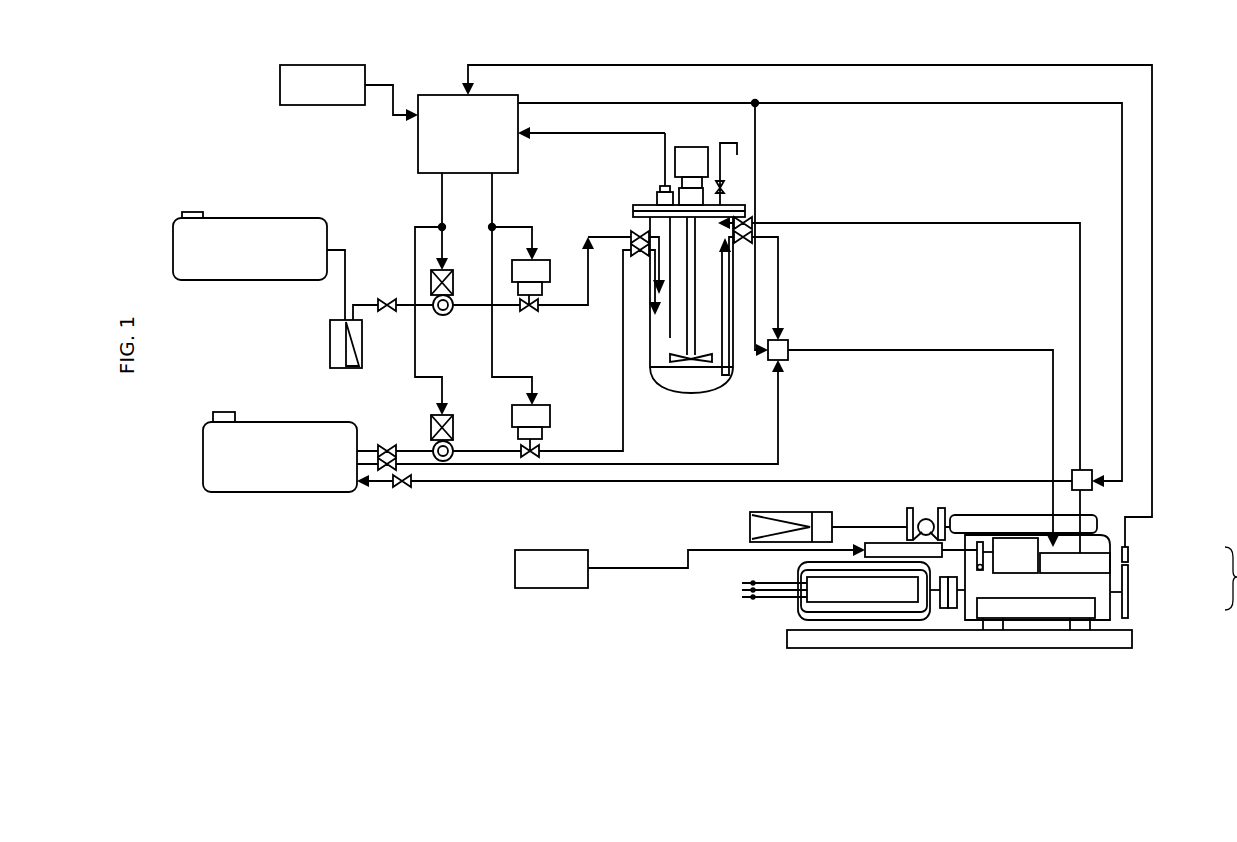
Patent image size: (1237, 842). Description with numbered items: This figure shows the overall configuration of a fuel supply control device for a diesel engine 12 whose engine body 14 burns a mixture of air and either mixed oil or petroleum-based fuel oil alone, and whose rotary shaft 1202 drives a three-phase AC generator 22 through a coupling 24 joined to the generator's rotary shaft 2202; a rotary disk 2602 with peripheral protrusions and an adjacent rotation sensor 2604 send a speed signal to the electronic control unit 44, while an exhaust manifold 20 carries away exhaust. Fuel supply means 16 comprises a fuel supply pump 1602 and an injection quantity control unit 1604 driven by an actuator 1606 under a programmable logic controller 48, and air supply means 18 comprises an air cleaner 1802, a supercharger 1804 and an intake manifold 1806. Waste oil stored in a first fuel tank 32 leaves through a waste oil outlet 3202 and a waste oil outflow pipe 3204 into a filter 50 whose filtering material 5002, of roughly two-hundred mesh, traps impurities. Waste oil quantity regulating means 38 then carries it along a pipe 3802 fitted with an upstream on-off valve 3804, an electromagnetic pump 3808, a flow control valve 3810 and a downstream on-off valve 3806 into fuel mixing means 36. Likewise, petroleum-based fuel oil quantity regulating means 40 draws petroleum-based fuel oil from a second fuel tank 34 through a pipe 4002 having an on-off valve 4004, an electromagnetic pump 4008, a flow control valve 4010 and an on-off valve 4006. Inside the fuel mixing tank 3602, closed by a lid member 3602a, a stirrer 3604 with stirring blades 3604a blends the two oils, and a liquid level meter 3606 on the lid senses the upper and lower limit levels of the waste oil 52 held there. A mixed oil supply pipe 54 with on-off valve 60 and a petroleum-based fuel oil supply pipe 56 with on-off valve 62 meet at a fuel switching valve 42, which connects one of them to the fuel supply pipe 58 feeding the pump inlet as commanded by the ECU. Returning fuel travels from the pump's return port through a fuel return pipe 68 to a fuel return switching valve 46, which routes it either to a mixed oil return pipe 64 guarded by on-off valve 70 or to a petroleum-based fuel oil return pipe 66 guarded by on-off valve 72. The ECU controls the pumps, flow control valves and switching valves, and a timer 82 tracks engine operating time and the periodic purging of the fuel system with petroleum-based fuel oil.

The timer 82 is at (280, 85).
The electronic control unit 44 is at (418, 157).
The first fuel tank 32 is at (283, 218).
The waste oil outlet 3202 is at (327, 243).
The waste oil outflow pipe 3204 is at (343, 302).
The filter 50 is at (330, 328).
The filtering material 5002 is at (345, 352).
The pipe for waste oil 3802 is at (360, 303).
The on-off valve 3804 is at (387, 313).
The electromagnetic pump 3808 is at (443, 316).
The waste oil quantity regulating means 38 is at (505, 316).
The flow control valve 3810 is at (550, 272).
The second fuel tank 34 is at (283, 422).
The on-off valve 4004 is at (387, 444).
The electromagnetic pump 4008 is at (440, 463).
The petroleum-based fuel oil quantity regulating means 40 is at (483, 425).
The flow control valve 4010 is at (550, 413).
The on-off valve 62 is at (387, 471).
The pipe for petroleum-based fuel oil 4002 is at (575, 466).
The on-off valve 72 is at (402, 489).
The petroleum-based fuel oil return pipe 66 is at (655, 484).
The programmable logic controller 48 is at (548, 590).
The fuel mixing means 36 is at (750, 208).
The fuel mixing tank 3602 is at (733, 280).
The lid member 3602a is at (633, 209).
The liquid level meter 3606 is at (660, 186).
The stirrer 3604 is at (695, 147).
The stirring blades 3604a is at (705, 367).
The waste oil 52 is at (670, 390).
The on-off valve 3806 is at (631, 236).
The on-off valve 4006 is at (633, 256).
The on-off valve 70 is at (755, 222).
The on-off valve 60 is at (752, 253).
The mixed oil return pipe 64 is at (1010, 223).
The mixed oil supply pipe 54 is at (778, 297).
The fuel switching valve 42 is at (790, 343).
The fuel supply pipe 58 is at (945, 350).
The petroleum-based fuel oil supply pipe 56 is at (778, 400).
The fuel return switching valve 46 is at (1092, 470).
The fuel return pipe 68 is at (1080, 500).
The air cleaner 1802 is at (750, 522).
The air supply means 18 is at (920, 497).
The supercharger 1804 is at (928, 519).
The intake manifold 1806 is at (1033, 515).
The actuator 1606 is at (875, 543).
The injection quantity control unit 1604 is at (1000, 538).
The fuel supply means 16 is at (1112, 537).
The fuel supply pump 1602 is at (1072, 573).
The diesel engine 12 is at (962, 635).
The exhaust manifold 20 is at (1030, 618).
The rotary shaft 1202 is at (965, 597).
The rotation sensor 2604 is at (1128, 553).
The rotary disk 2602 is at (1128, 595).
The engine body 14 is at (1105, 648).
The three-phase AC generator 22 is at (848, 602).
The rotary shaft 2202 is at (938, 608).
The coupling 24 is at (947, 608).